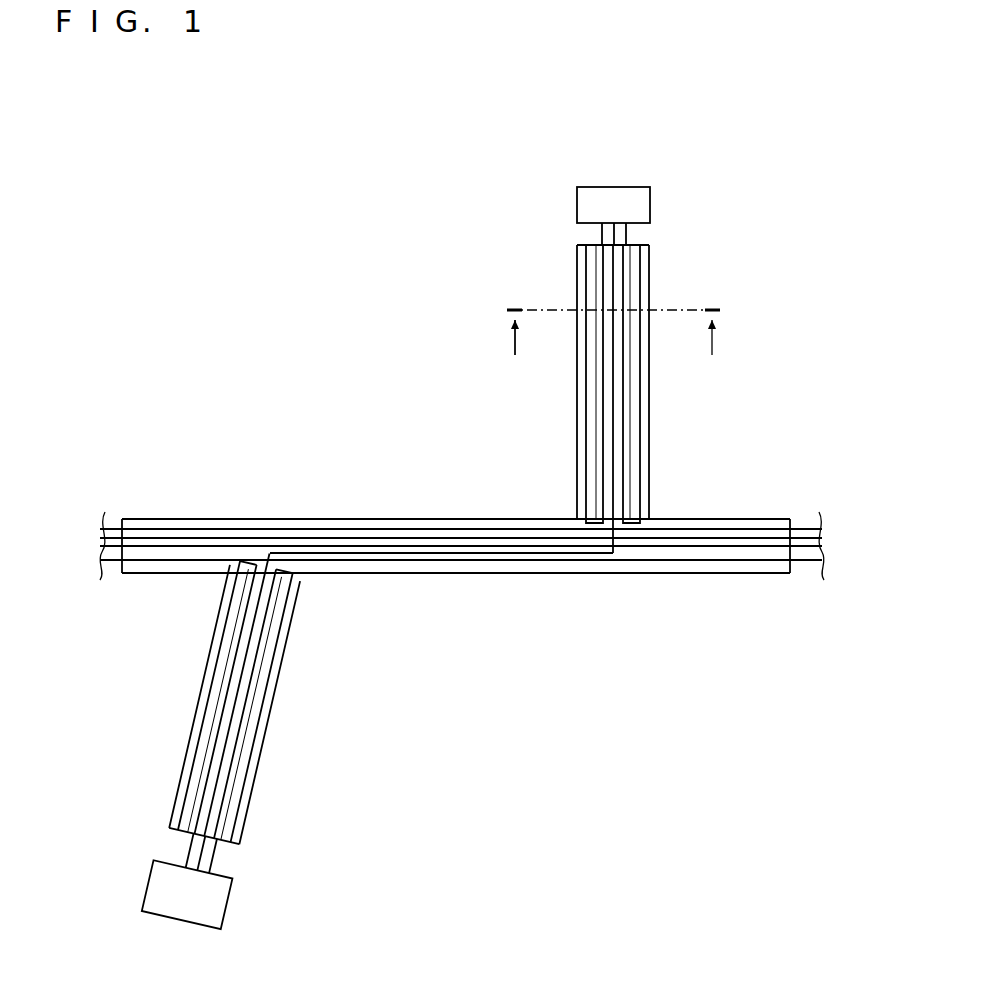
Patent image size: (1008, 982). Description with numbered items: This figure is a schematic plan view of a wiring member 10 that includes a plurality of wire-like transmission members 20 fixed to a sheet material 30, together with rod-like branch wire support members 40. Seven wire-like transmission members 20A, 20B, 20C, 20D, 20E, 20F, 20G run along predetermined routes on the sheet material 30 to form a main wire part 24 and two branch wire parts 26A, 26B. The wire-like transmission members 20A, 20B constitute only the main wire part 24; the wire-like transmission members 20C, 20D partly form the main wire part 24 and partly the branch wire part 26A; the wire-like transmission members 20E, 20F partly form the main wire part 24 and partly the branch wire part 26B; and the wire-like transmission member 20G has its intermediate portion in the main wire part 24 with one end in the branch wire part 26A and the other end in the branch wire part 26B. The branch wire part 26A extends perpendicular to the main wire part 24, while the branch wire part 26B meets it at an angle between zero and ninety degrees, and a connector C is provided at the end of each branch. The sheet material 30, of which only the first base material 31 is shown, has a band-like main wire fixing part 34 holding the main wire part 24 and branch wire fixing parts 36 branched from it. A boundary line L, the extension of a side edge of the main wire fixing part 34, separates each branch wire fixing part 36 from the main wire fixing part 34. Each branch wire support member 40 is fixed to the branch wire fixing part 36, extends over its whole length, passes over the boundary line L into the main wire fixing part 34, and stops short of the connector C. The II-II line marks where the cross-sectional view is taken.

The wiring member 10 is at (207, 129).
The wire-like transmission member 20 is at (462, 546).
The wire-like transmission member 20A is at (141, 530).
The wire-like transmission member 20B is at (190, 538).
The wire-like transmission member 20C is at (510, 538).
The wire-like transmission member 20D is at (756, 530).
The wire-like transmission member 20E is at (152, 575).
The wire-like transmission member 20F is at (718, 575).
The wire-like transmission member 20G is at (512, 575).
The main wire part 24 is at (228, 525).
The branch wire part 26A is at (634, 437).
The branch wire part 26B is at (234, 791).
The sheet material 30 is at (367, 515).
The first base material 31 is at (423, 520).
The main wire fixing part 34 is at (431, 575).
The branch wire fixing part 36 is at (651, 256).
The branch wire support member 40 is at (590, 412).
The connector C is at (614, 198).
The boundary line L is at (655, 513).
The II-II line II is at (613, 347).